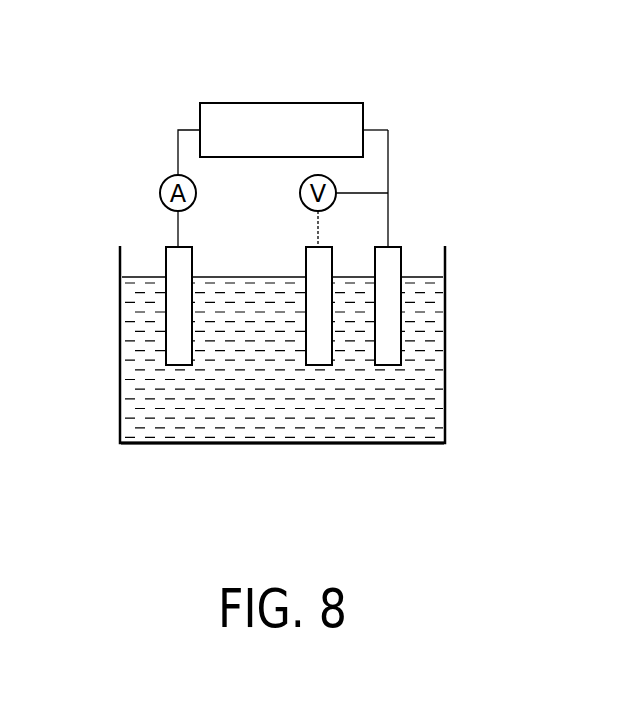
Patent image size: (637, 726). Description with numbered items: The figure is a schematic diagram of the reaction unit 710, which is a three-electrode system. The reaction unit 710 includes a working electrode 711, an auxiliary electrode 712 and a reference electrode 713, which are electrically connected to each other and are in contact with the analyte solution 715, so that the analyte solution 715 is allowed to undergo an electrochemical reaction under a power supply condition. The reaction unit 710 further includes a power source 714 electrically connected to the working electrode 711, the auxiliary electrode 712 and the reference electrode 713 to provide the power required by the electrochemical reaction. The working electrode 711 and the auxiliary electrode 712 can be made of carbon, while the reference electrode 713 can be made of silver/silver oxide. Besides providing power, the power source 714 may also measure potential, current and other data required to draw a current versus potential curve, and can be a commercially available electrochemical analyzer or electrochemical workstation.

The reaction unit 710 is at (138, 445).
The working electrode 711 is at (392, 317).
The auxiliary electrode 712 is at (177, 334).
The reference electrode 713 is at (322, 352).
The power source 714 is at (242, 115).
The analyte solution 715 is at (240, 402).